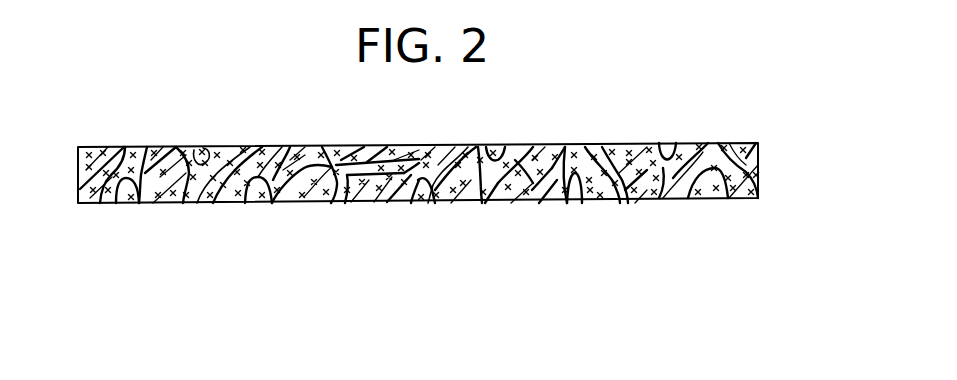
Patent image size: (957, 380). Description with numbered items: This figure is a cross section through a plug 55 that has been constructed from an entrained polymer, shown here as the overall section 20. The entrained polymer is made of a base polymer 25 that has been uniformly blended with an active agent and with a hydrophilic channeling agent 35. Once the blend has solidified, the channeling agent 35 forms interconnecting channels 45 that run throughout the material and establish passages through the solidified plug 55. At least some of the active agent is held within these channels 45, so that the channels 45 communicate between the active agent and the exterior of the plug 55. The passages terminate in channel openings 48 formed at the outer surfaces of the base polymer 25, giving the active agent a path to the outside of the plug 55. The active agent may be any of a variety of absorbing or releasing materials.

The porous fiber mat article 20 is at (646, 121).
The first fibers 25 is at (110, 150).
The fiber bond junction 35 is at (224, 160).
The fiber 45 is at (173, 147).
The fiber 48 is at (479, 146).
The mat edge / thickness 55 is at (781, 163).